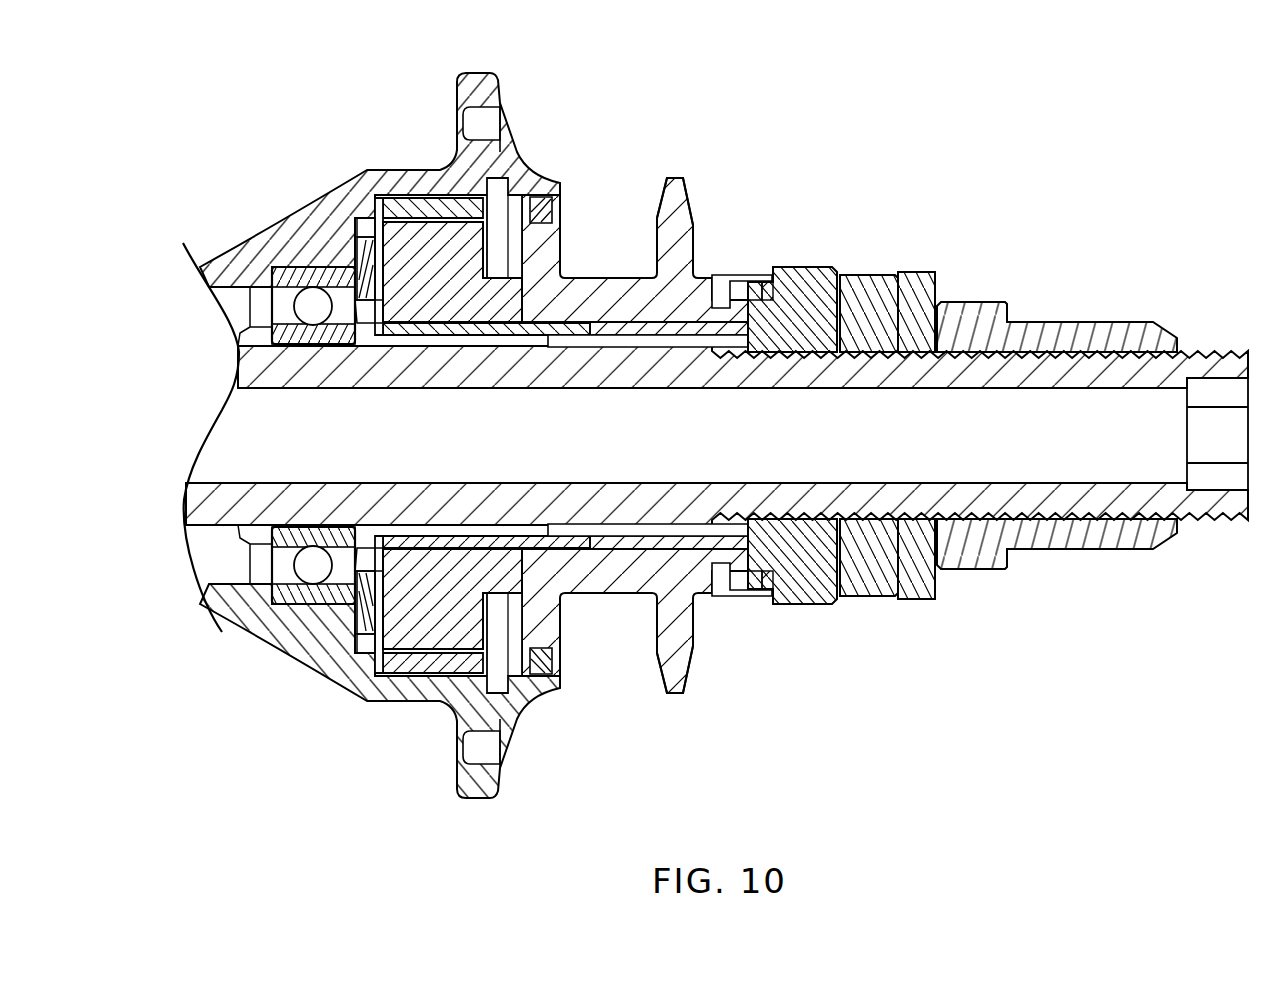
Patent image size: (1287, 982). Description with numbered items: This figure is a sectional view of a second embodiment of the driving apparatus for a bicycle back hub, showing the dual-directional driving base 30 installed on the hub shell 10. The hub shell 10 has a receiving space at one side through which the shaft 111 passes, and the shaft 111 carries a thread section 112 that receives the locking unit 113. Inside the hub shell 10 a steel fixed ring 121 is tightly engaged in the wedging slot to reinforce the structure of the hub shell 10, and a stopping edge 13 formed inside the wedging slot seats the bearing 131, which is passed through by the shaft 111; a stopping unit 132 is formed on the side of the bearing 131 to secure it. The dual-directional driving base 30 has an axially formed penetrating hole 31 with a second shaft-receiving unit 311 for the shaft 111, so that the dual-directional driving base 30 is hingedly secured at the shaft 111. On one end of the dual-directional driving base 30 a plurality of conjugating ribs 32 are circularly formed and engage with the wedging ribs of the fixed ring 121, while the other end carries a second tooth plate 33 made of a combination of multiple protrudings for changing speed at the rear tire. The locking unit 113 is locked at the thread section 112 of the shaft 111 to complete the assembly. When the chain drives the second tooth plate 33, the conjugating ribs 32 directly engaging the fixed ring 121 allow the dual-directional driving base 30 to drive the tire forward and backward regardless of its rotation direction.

The hub shell 10 is at (323, 212).
The shaft 111 is at (270, 370).
The thread section 112 is at (990, 572).
The locking unit 113 is at (868, 599).
The stopping edge 13 is at (270, 588).
The bearing 131 is at (313, 435).
The stopping unit 132 is at (363, 618).
The fixed ring 121 is at (380, 664).
The dual-directional driving base 30 is at (563, 572).
The penetrating hole 31 is at (722, 532).
The second shaft-receiving unit 311 is at (772, 592).
The conjugating ribs 32 is at (420, 645).
The second tooth plate 33 is at (673, 200).